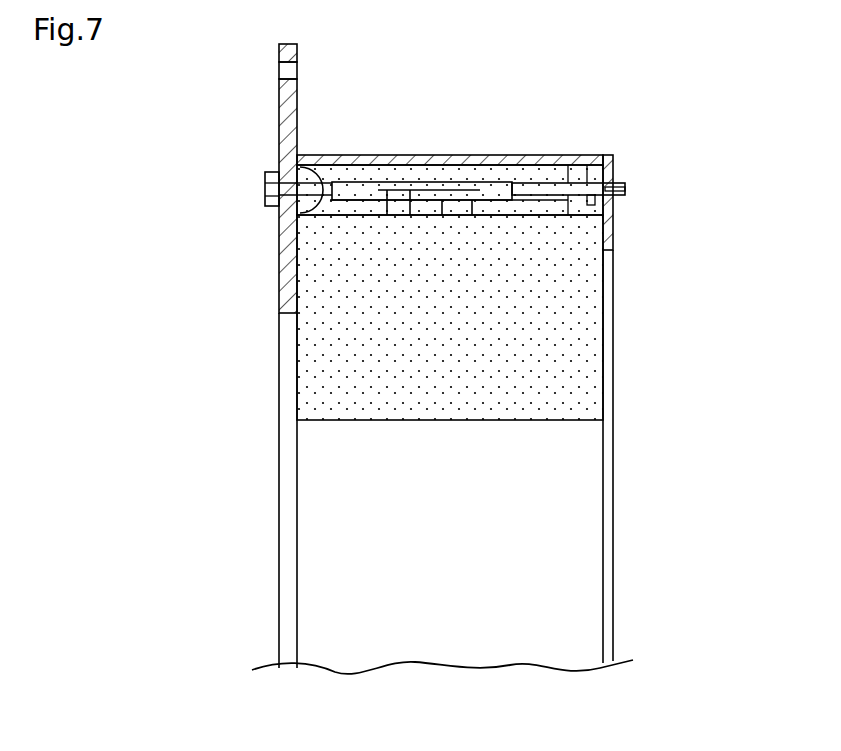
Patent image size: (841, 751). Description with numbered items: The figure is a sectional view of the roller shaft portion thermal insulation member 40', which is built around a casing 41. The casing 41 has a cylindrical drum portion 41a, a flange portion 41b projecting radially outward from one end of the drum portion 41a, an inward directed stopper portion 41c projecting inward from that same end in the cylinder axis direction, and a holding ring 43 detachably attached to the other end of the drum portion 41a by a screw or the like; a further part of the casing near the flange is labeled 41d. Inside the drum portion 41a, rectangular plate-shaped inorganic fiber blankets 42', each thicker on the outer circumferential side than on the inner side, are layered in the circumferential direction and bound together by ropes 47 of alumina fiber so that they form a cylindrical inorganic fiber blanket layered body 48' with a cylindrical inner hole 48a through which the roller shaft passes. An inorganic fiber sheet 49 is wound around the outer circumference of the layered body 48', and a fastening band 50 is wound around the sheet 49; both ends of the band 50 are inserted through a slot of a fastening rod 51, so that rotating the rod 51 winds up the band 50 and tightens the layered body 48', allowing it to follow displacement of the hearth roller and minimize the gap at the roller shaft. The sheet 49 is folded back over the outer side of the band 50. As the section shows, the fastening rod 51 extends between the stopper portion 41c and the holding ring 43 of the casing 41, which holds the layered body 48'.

The roller shaft portion thermal insulation member 40' is at (517, 55).
The casing 41 is at (594, 147).
The drum portion 41a is at (437, 157).
The flange portion 41b is at (297, 53).
The stopper portion 41c is at (279, 265).
The opening in side wall 41d is at (283, 70).
The inorganic fiber blankets 42' is at (450, 350).
The holding ring 43 is at (617, 221).
The ropes 47 is at (386, 253).
The inorganic fiber blanket layered body 48' is at (284, 449).
The cylindrical inner hole 48a is at (562, 575).
The inorganic fiber sheet 49 is at (385, 176).
The fastening band 50 is at (398, 208).
The fastening rod 51 is at (550, 188).